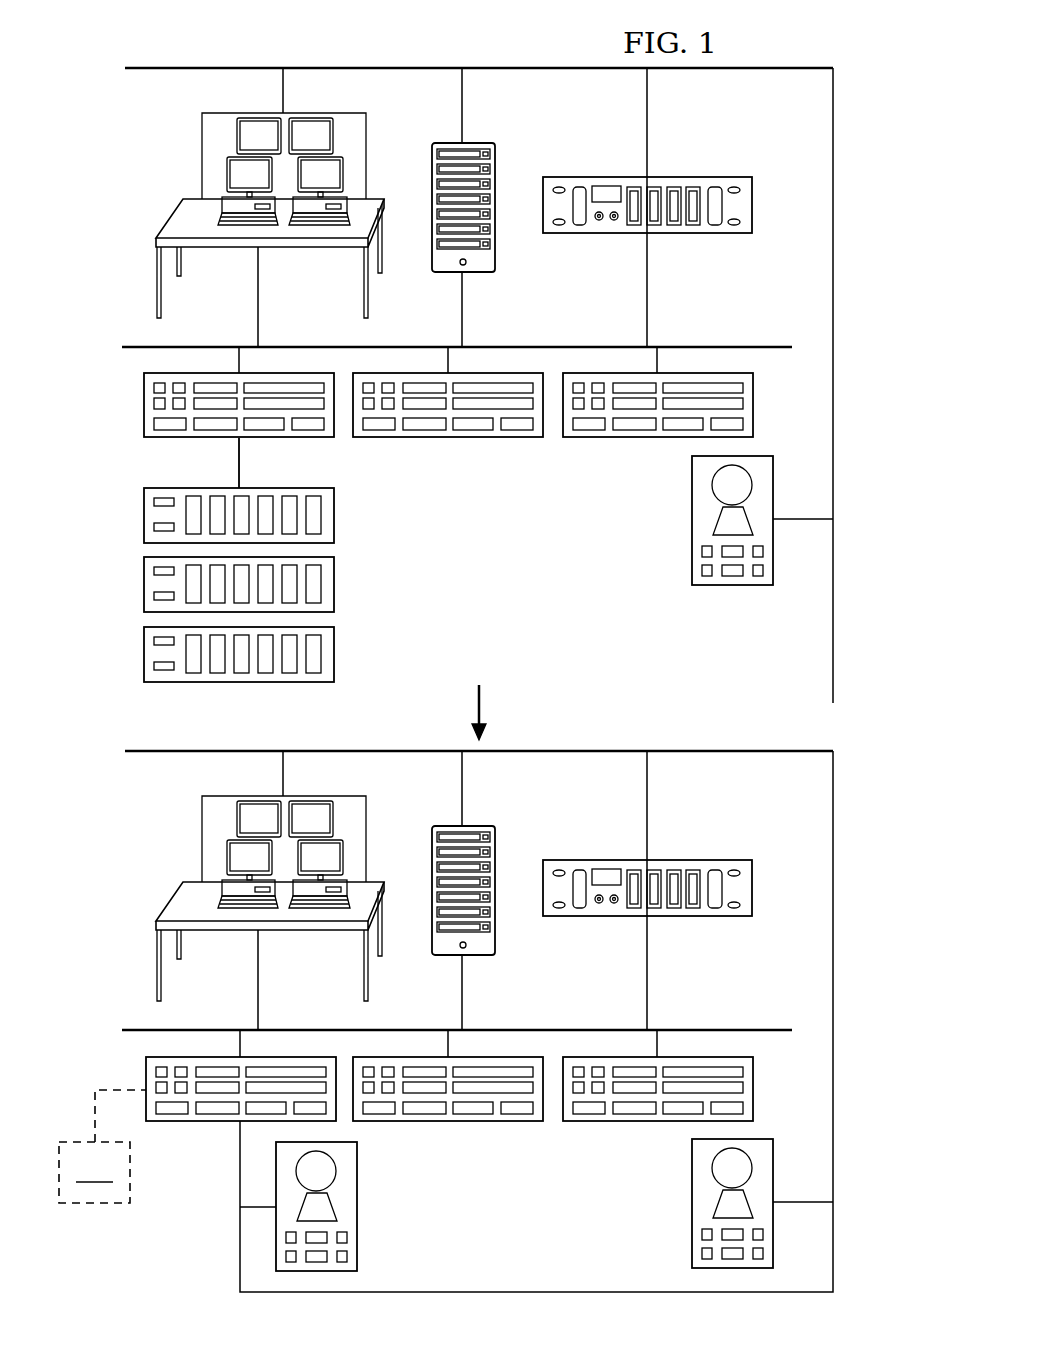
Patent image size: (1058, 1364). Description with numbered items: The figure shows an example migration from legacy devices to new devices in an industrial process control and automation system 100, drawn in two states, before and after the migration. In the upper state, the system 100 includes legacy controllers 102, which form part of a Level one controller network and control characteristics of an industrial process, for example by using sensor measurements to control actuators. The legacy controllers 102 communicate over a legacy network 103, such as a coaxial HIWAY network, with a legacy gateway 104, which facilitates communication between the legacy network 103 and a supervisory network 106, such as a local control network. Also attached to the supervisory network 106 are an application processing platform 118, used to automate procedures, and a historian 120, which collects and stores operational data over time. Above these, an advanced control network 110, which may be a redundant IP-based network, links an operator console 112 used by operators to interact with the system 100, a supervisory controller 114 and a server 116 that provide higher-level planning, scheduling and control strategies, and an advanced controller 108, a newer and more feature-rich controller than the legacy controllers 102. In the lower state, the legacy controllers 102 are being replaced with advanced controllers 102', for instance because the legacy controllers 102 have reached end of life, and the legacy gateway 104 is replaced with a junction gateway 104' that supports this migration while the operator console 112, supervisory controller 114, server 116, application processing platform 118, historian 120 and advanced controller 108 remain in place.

The industrial process control and automation system 100 is at (94, 64).
The advanced control network 110 is at (353, 68).
The supervisory network 106 is at (732, 347).
The operator console 112 is at (194, 157).
The supervisory controller 114 is at (478, 143).
The server 116 is at (692, 177).
The legacy gateway 104 is at (207, 405).
The legacy network 103 is at (239, 466).
The legacy controller 102 is at (195, 845).
The application processing platform 118 is at (438, 437).
The historian 120 is at (753, 405).
The advanced controller 108 is at (740, 586).
The junction gateway 104' is at (241, 1115).
The advanced controller 102' is at (349, 1206).